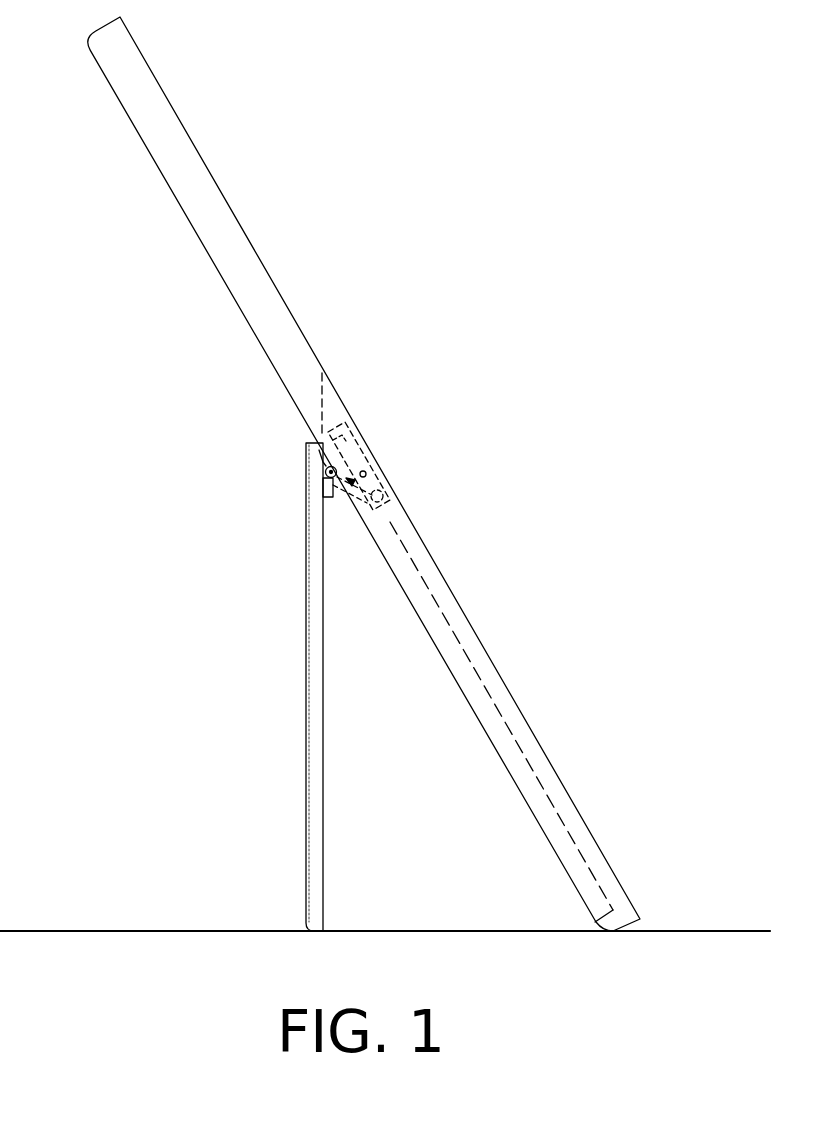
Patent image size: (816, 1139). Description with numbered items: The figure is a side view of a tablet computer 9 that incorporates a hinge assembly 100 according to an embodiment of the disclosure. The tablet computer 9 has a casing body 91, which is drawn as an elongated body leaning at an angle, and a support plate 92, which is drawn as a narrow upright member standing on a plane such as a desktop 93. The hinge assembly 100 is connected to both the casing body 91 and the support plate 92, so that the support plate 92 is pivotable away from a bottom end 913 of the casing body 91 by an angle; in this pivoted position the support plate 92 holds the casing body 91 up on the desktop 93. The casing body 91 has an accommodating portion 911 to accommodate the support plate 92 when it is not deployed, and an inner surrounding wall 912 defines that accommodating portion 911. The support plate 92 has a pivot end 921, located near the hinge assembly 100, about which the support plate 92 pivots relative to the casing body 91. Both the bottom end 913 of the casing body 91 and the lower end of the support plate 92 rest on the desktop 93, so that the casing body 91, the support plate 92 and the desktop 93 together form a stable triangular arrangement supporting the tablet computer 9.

The tablet computer 9 is at (185, 247).
The casing body 91 is at (158, 171).
The accommodating portion 911 is at (386, 552).
The inner surrounding wall 912 is at (323, 372).
The bottom end 913 is at (620, 898).
The support plate 92 is at (306, 611).
The pivot end 921 is at (308, 449).
The desktop 93 is at (697, 931).
The hinge assembly 100 is at (372, 437).